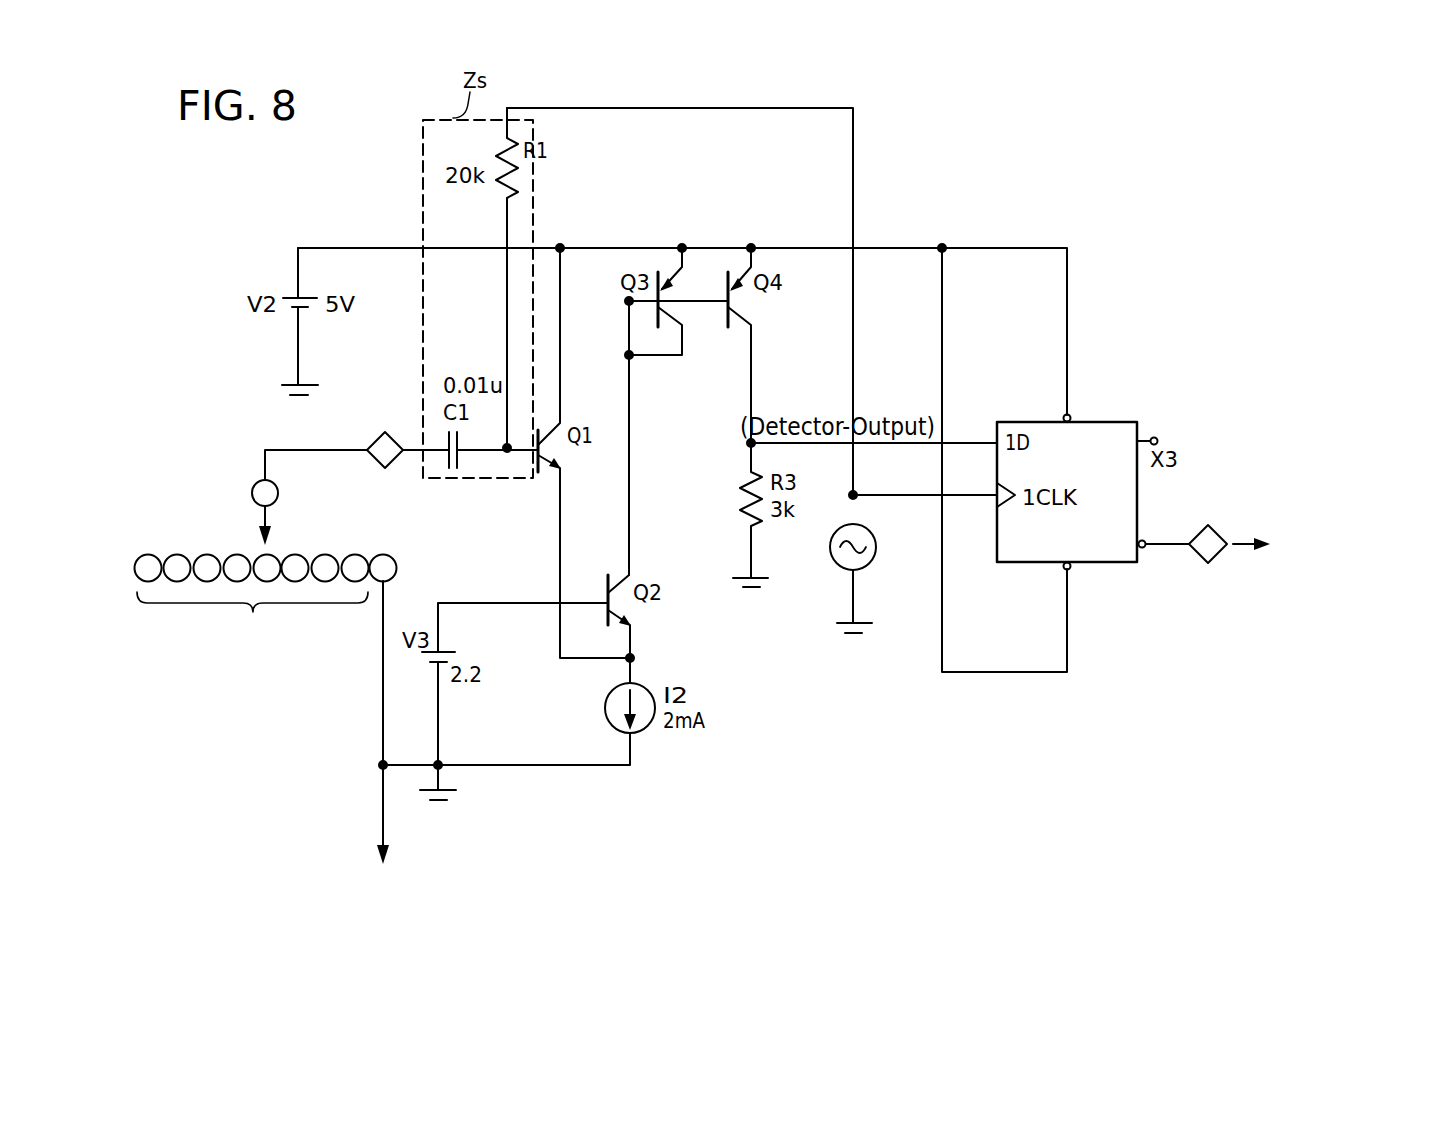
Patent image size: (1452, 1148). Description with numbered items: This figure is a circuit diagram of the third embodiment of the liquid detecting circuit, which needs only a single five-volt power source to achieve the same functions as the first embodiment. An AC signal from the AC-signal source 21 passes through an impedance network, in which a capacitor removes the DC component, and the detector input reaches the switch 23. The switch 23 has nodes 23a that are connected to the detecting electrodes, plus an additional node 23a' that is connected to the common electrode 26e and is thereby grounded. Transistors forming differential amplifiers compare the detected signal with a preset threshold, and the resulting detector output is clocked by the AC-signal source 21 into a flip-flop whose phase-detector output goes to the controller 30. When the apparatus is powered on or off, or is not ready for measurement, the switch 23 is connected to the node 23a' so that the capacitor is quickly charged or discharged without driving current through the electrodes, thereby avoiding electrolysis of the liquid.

The AC-signal source 21 is at (830, 542).
The switch 23 is at (264, 458).
The nodes of the switch 23a is at (252, 602).
The node connected to the common electrode 23a' is at (413, 555).
The common electrode 26e is at (396, 748).
The controller 30 is at (1284, 545).